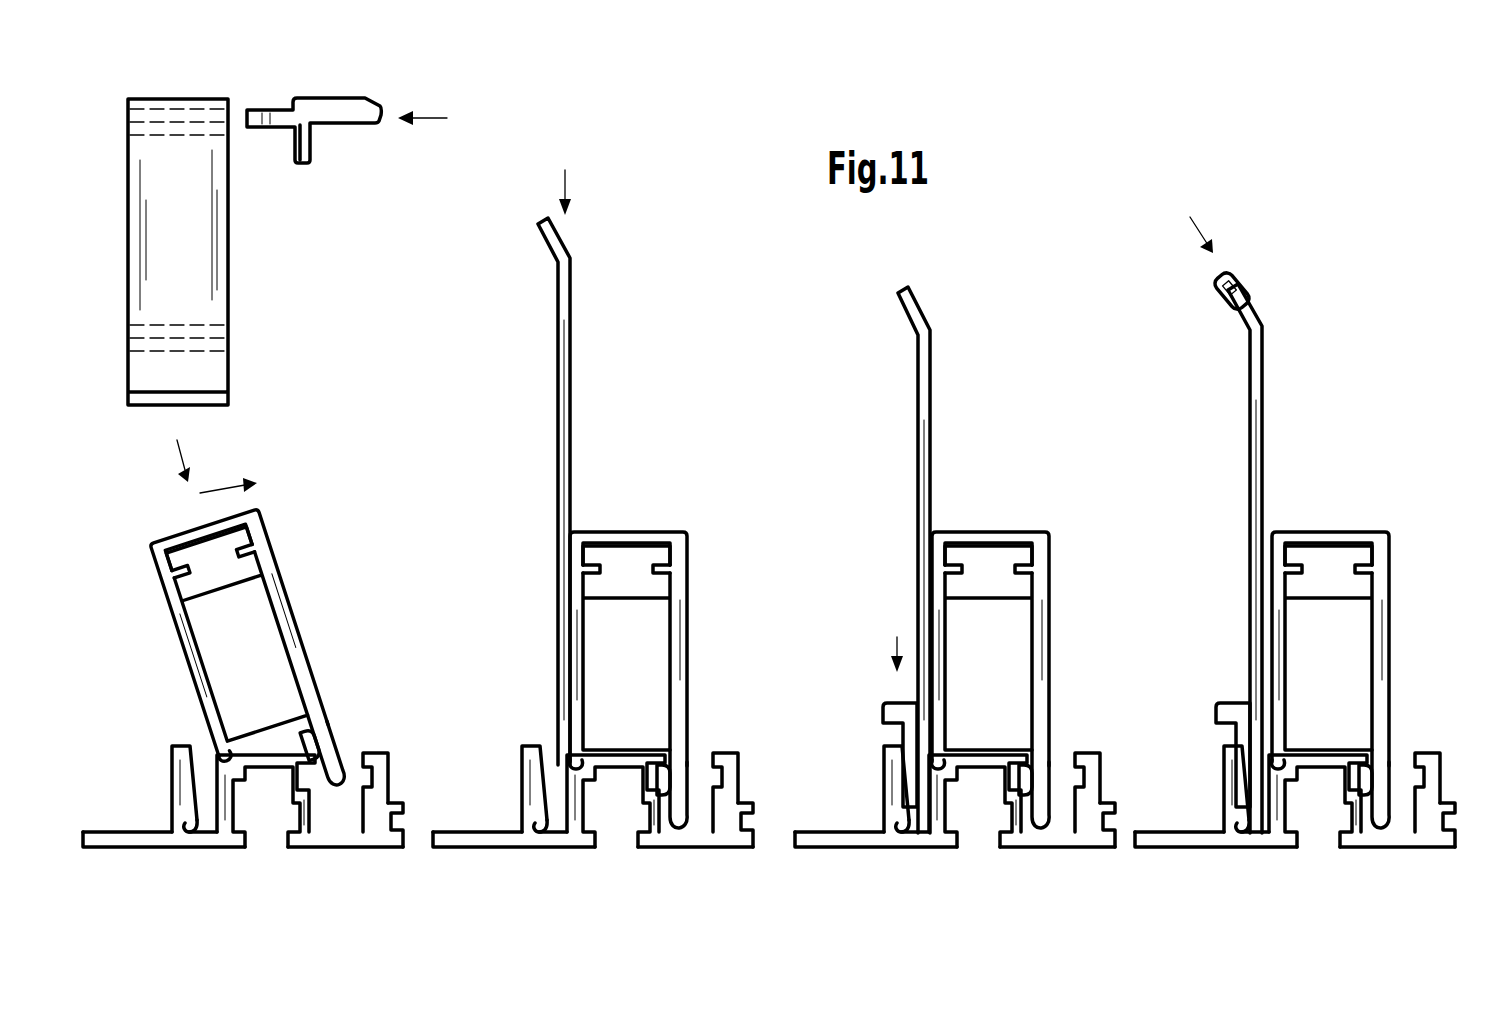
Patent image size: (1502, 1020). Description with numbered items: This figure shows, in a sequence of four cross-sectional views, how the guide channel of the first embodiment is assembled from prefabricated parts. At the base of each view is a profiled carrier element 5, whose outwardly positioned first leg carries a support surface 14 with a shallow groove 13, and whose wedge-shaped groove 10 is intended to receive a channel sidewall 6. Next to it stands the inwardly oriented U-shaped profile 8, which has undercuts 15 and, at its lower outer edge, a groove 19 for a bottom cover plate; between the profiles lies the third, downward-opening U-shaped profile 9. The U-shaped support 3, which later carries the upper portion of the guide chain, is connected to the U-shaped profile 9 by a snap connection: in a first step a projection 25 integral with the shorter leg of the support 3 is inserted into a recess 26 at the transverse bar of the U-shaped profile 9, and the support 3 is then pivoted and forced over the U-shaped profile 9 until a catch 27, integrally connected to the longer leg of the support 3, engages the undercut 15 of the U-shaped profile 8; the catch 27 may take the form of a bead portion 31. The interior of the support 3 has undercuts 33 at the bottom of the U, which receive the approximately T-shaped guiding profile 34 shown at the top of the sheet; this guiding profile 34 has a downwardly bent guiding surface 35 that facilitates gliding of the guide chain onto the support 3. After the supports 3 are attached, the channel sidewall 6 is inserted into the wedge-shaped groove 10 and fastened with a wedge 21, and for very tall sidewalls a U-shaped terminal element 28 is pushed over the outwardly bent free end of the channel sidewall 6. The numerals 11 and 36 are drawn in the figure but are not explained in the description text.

The support 3 is at (195, 229).
The profiled carrier element 5 is at (150, 793).
The channel sidewall 6 is at (557, 377).
The U-shaped profile 8 is at (355, 753).
The U-shaped profile 9 is at (246, 861).
The wedge-shaped groove 10 is at (203, 830).
The bead 11 is at (184, 830).
The shallow groove 13 is at (130, 832).
The support surface 14 is at (98, 847).
The undercut 15 is at (293, 765).
The groove 19 is at (398, 823).
The wedge 21 is at (884, 708).
The projection 25 is at (212, 760).
The recess 26 is at (228, 755).
The catch 27 is at (312, 728).
The U-shaped terminal element 28 is at (1235, 272).
The bead portion 31 is at (238, 515).
The undercut 33 is at (172, 563).
The guiding profile 34 is at (340, 90).
The guiding surface 35 is at (366, 122).
The strip 36 is at (175, 98).